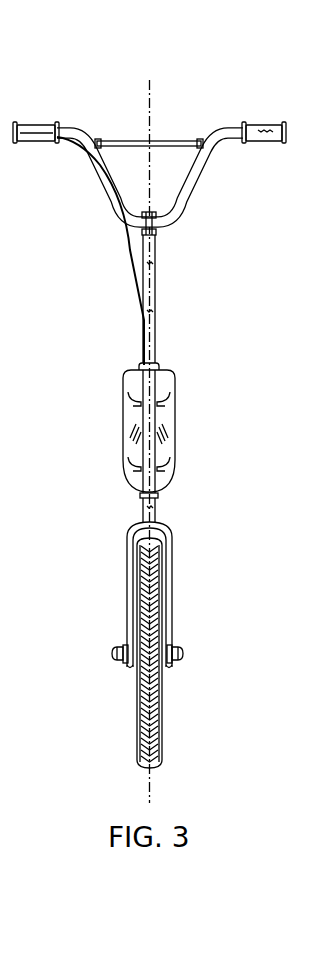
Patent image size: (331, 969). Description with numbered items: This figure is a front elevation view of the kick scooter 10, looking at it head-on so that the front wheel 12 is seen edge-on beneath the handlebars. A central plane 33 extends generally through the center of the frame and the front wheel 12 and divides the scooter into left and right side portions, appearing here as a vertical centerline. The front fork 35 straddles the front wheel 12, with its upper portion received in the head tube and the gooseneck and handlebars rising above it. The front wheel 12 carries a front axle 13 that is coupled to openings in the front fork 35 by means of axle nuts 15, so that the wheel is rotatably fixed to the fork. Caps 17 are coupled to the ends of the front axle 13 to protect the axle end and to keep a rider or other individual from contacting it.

The kick scooter 10 is at (205, 348).
The front wheel 12 is at (158, 718).
The front axle 13 is at (160, 650).
The axle nuts 15 is at (182, 658).
The caps 17 is at (183, 651).
The central plane 33 is at (150, 94).
The front fork 35 is at (168, 540).